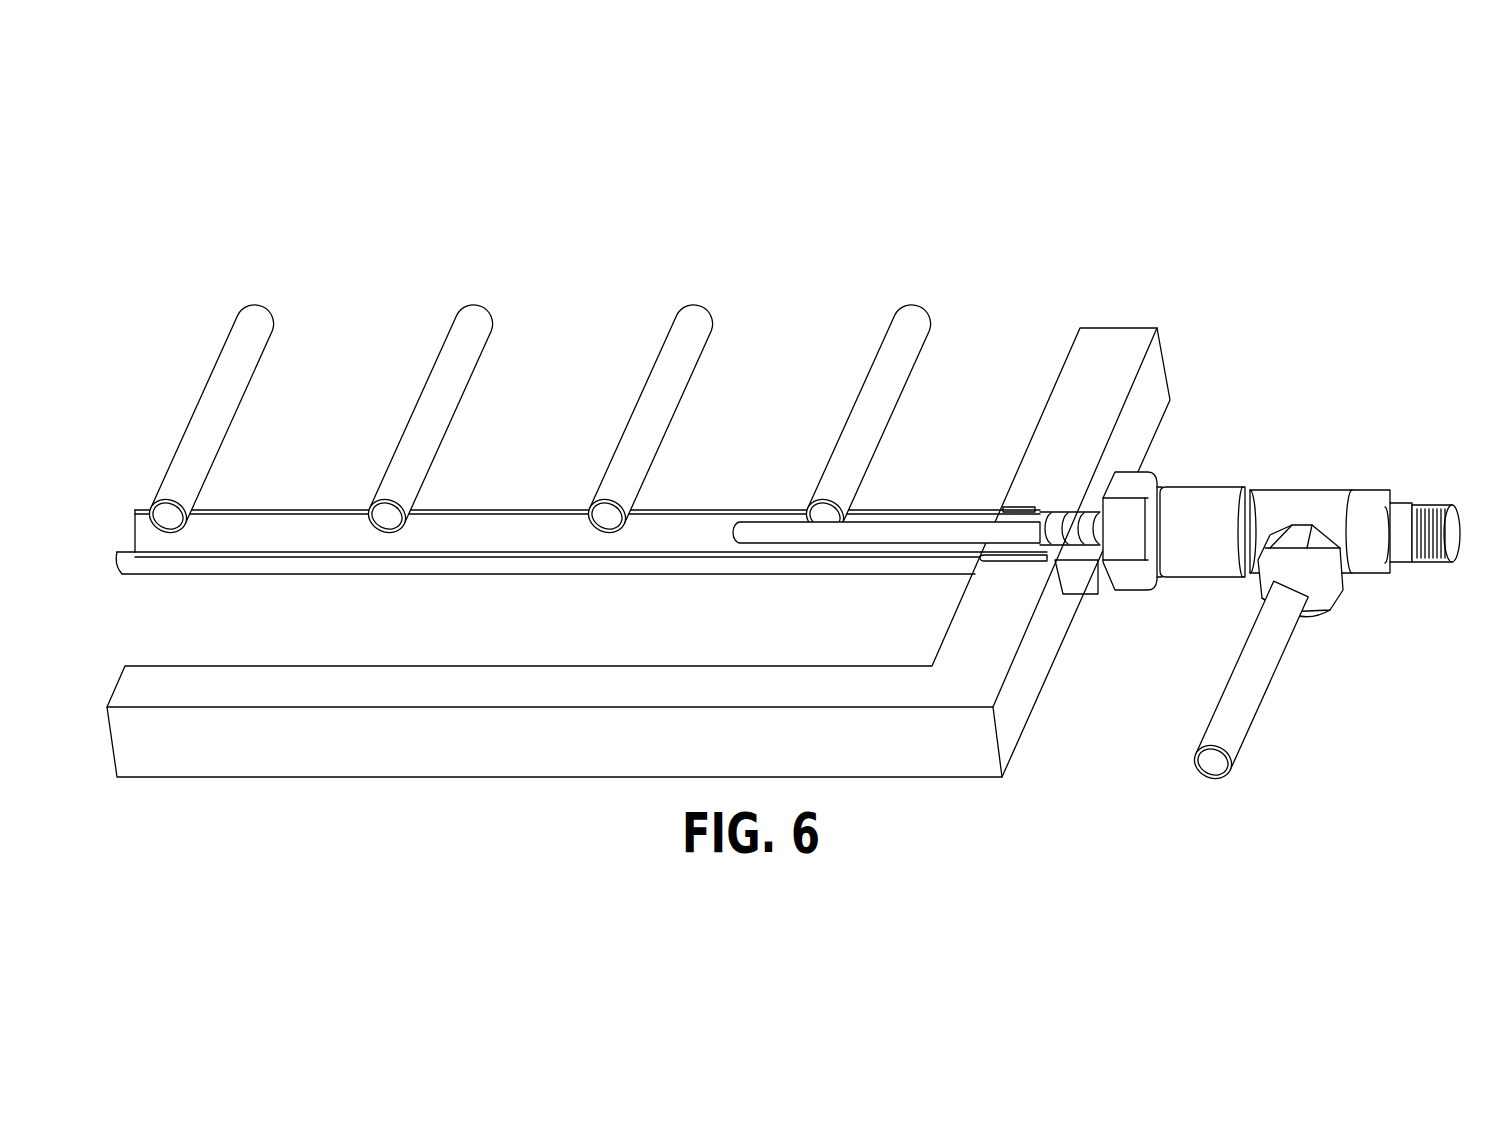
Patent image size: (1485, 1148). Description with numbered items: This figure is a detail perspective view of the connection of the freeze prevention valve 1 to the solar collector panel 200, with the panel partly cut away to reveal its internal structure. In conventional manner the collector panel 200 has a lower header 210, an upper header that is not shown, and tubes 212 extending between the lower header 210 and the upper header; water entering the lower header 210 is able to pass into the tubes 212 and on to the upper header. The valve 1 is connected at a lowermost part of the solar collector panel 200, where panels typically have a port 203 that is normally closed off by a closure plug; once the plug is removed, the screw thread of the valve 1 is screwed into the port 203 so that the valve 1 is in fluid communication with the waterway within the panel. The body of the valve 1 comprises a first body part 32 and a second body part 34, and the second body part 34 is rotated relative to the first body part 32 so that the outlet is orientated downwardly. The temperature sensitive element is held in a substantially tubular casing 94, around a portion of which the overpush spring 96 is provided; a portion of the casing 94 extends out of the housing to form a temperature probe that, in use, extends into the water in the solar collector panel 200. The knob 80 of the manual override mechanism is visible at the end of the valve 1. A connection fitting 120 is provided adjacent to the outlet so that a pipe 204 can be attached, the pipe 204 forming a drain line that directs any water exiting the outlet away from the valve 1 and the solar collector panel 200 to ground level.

The valve 1 is at (1310, 408).
The first body part 32 is at (1320, 489).
The second body part 34 is at (1208, 486).
The knob 80 is at (1440, 505).
The casing 94 is at (920, 520).
The overpush spring 96 is at (1052, 515).
The connection fitting 120 is at (1330, 602).
The solar collector panel 200 is at (922, 226).
The port 203 is at (1027, 560).
The pipe 204 is at (1285, 682).
The lower header 210 is at (195, 575).
The tubes 212 is at (390, 338).